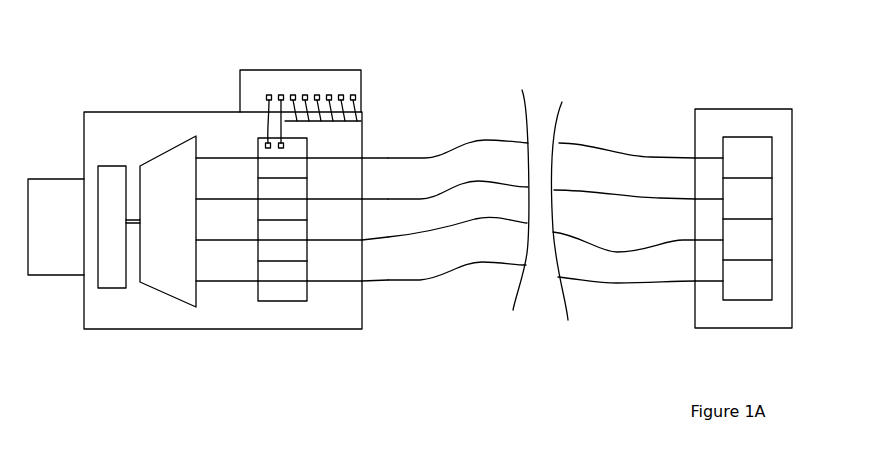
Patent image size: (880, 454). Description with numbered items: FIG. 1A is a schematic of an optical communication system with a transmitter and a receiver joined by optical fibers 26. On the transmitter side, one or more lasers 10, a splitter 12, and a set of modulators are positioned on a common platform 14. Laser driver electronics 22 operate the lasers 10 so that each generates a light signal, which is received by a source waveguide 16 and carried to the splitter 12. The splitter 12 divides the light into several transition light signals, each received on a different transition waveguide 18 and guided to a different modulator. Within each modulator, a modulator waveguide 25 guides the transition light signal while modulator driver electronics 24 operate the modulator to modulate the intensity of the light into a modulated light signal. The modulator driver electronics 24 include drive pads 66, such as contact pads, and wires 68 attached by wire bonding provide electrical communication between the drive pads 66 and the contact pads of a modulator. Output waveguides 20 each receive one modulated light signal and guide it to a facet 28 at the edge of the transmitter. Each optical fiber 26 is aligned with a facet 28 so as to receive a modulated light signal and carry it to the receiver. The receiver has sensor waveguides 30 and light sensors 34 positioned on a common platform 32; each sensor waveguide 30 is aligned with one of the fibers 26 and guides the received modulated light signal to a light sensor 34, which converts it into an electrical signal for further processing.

The laser 10 is at (107, 290).
The splitter 12 is at (160, 155).
The common platform 14 is at (208, 324).
The source waveguide 16 is at (135, 216).
The transition waveguide 18 is at (203, 157).
The output waveguide 20 is at (322, 158).
The laser driver electronics 22 is at (28, 277).
The modulator driver electronics 24 is at (362, 75).
The modulator waveguide 25 is at (297, 156).
The optical fiber 26 is at (448, 148).
The facet 28 is at (368, 157).
The sensor waveguide 30 is at (707, 153).
The common platform 32 is at (763, 118).
The light sensor 34 is at (760, 153).
The drive pad 66 is at (268, 93).
The wire 68 is at (266, 128).